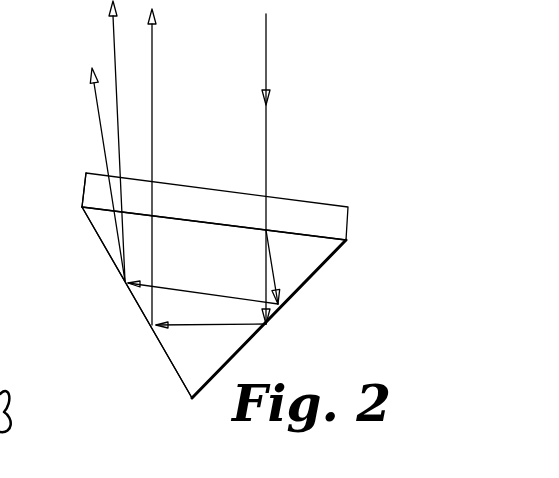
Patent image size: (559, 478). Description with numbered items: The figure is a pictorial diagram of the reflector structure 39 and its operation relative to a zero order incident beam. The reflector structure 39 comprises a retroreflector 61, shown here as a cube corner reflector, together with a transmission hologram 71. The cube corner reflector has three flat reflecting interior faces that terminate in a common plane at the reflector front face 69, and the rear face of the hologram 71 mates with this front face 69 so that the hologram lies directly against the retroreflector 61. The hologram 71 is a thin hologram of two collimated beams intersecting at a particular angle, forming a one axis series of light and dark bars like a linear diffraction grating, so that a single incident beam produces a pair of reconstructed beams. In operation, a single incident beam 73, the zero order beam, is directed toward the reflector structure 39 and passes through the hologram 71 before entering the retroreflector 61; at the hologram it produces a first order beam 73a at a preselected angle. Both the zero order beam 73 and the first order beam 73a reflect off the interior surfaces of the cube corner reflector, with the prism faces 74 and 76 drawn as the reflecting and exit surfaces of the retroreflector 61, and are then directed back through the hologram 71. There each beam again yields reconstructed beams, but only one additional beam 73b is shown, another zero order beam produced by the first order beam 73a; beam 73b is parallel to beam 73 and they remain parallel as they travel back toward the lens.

The reflector structure 39 is at (301, 174).
The retroreflector 61 is at (160, 371).
The reflector front face 69 is at (92, 206).
The transmission hologram 71 is at (92, 187).
The incident beam 73 is at (152, 118).
The first order beam 73a is at (100, 140).
The additional beam 73b is at (113, 50).
The reflecting face of prism 74 is at (253, 339).
The exit face of prism 76 is at (137, 303).